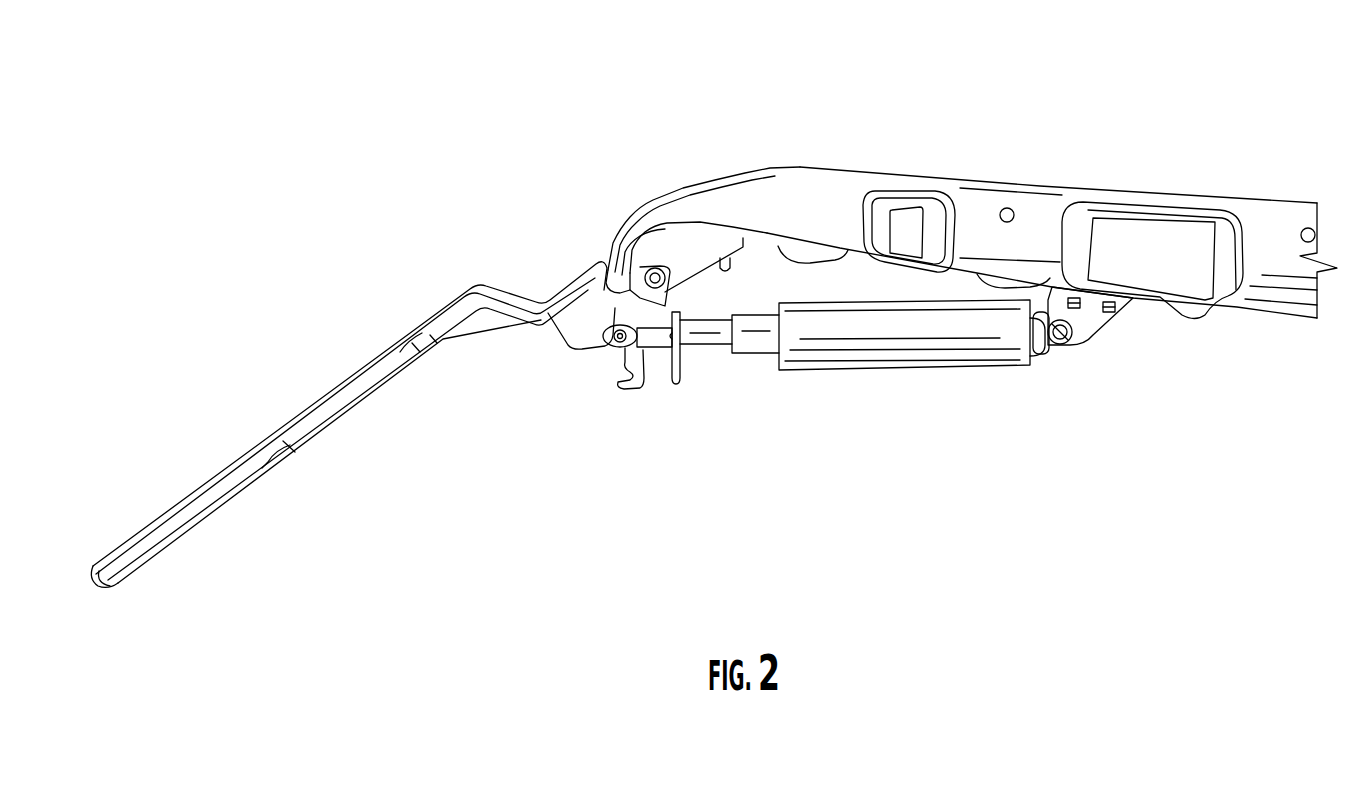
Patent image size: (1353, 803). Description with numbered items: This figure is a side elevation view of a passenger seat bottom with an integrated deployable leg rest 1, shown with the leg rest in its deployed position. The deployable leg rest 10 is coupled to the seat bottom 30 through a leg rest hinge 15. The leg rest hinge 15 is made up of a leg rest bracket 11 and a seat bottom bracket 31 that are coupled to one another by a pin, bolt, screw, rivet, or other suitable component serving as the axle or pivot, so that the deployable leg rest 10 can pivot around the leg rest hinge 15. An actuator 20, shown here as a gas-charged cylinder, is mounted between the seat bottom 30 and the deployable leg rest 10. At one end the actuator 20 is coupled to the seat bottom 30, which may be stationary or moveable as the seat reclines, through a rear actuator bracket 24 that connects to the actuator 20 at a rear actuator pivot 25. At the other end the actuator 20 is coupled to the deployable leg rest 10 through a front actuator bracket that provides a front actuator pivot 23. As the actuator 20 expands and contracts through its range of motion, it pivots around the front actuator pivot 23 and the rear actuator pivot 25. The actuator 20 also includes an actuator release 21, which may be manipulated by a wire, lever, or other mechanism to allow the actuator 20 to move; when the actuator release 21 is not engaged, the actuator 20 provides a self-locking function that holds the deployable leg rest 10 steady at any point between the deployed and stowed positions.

The passenger seat bottom with an integrated deployable leg rest 1 is at (364, 248).
The deployable leg rest 10 is at (283, 423).
The leg rest bracket 11 is at (560, 345).
The leg rest hinge 15 is at (647, 267).
The actuator 20 is at (923, 372).
The actuator release 21 is at (624, 390).
The front actuator pivot 23 is at (602, 348).
The rear actuator bracket 24 is at (1090, 317).
The rear actuator pivot 25 is at (1070, 348).
The seat bottom 30 is at (1022, 185).
The seat bottom bracket 31 is at (688, 253).